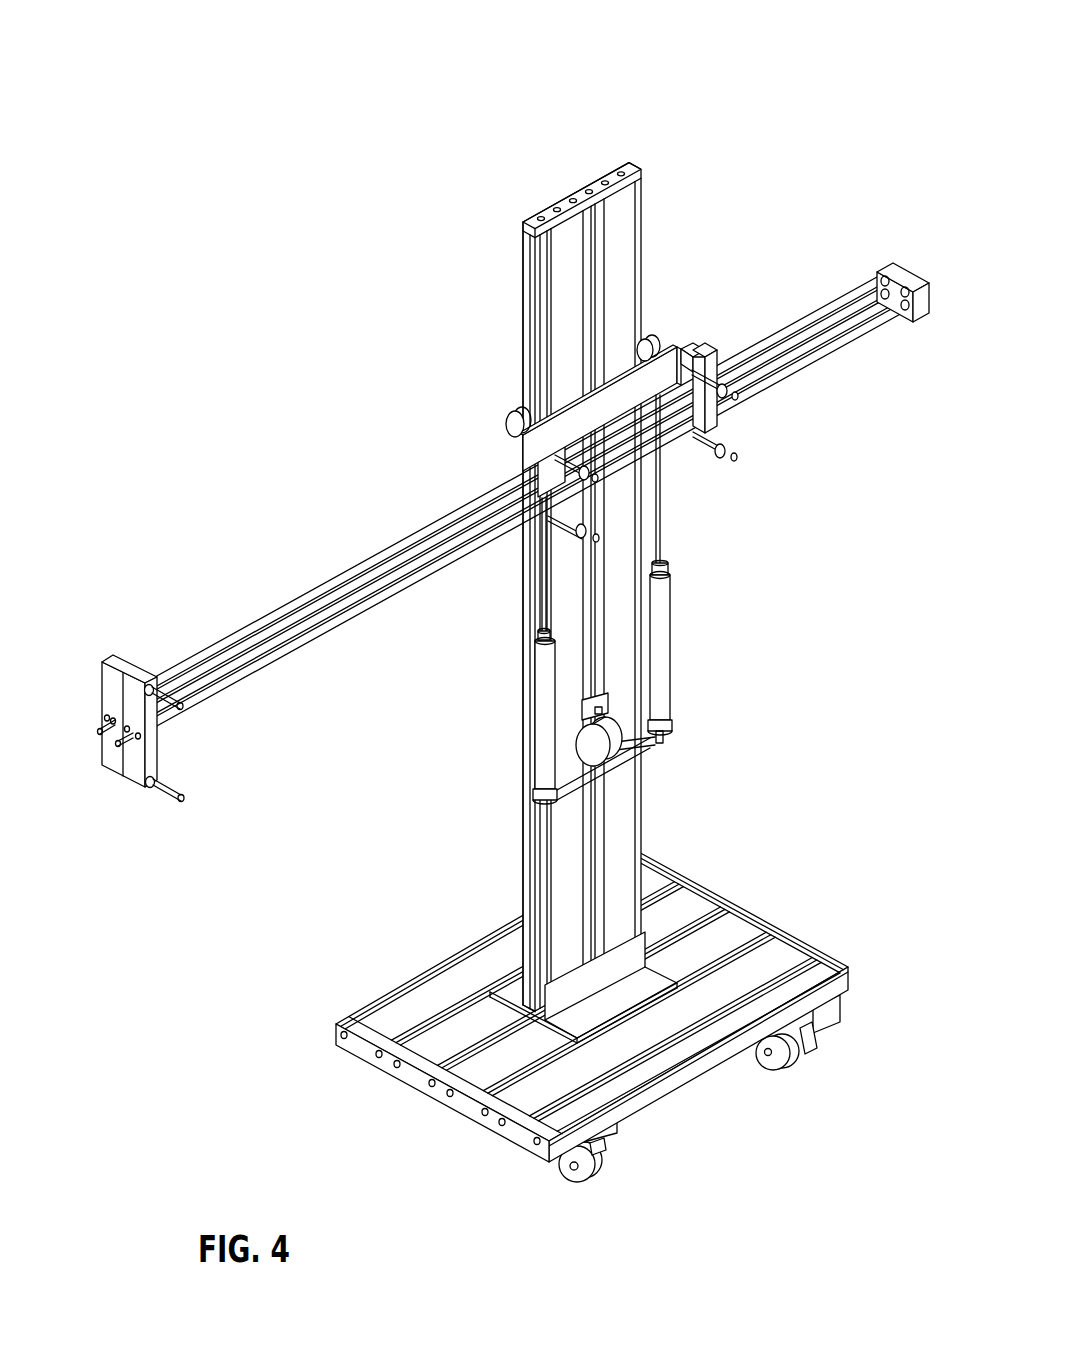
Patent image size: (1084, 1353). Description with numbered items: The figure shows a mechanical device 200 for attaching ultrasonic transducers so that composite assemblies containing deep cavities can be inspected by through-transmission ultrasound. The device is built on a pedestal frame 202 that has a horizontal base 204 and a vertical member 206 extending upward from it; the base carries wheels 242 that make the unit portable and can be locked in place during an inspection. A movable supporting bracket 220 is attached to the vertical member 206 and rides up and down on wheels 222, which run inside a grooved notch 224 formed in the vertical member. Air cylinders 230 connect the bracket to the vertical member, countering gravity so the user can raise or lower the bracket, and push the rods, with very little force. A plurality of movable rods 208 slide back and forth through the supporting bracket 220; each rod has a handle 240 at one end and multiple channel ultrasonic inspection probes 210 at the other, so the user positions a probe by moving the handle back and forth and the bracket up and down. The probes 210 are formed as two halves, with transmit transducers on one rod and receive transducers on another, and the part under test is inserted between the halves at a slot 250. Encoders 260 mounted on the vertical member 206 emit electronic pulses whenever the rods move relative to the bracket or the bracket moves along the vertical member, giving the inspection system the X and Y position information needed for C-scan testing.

The mechanical device 200 is at (553, 78).
The pedestal frame 202 is at (820, 955).
The horizontal base 204 is at (465, 1105).
The vertical member 206 is at (645, 815).
The movable rods 208 is at (318, 598).
The inspection probes 210 is at (112, 776).
The movable supporting bracket 220 is at (678, 348).
The wheels 222 is at (651, 340).
The grooved notch 224 is at (528, 262).
The air cylinders 230 is at (540, 716).
The handle 240 is at (902, 268).
The wheels 242 is at (776, 1072).
The slot 250 is at (134, 644).
The encoders 260 is at (622, 752).